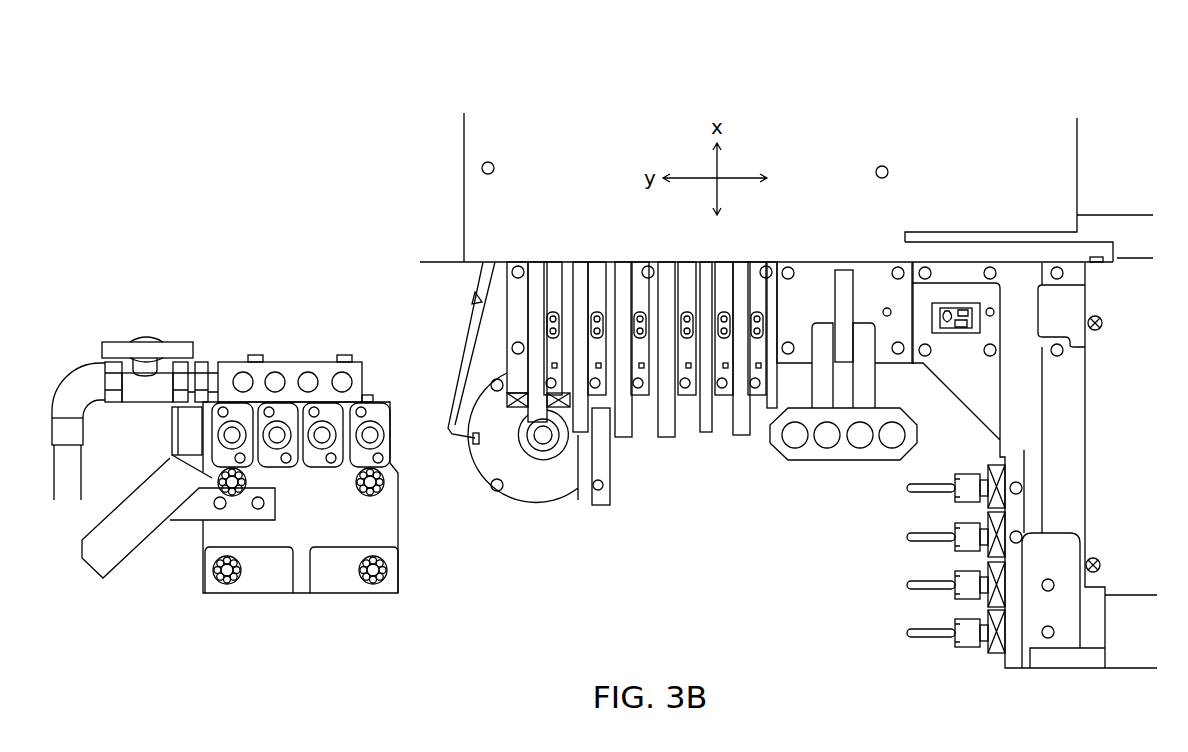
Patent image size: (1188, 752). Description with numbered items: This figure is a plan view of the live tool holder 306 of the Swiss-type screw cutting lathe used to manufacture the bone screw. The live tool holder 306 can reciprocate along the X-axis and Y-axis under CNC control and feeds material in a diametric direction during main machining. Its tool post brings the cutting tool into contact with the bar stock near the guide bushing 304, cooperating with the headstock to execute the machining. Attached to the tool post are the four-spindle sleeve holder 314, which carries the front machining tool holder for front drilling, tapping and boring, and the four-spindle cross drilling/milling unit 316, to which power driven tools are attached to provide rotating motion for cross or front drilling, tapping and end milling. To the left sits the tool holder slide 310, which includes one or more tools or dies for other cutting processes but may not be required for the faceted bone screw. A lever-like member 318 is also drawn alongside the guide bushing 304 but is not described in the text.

The guide bushing 304 is at (607, 458).
The live tool holder 306 is at (1005, 110).
The tool holder slide 310 is at (298, 532).
The 4-spindle sleeve holder 314 is at (840, 455).
The 4-spindle cross drilling/milling unit 316 is at (1020, 507).
The lever rod 318 is at (517, 325).